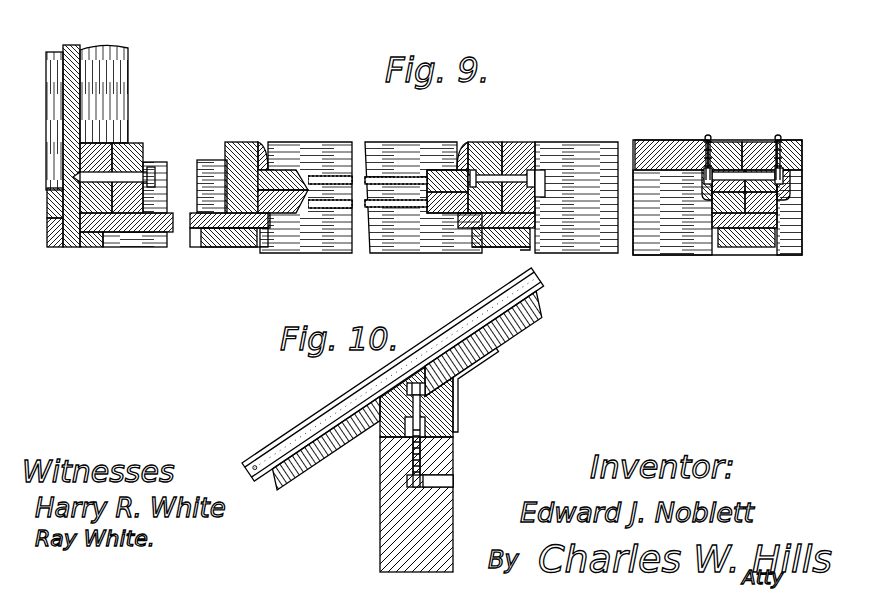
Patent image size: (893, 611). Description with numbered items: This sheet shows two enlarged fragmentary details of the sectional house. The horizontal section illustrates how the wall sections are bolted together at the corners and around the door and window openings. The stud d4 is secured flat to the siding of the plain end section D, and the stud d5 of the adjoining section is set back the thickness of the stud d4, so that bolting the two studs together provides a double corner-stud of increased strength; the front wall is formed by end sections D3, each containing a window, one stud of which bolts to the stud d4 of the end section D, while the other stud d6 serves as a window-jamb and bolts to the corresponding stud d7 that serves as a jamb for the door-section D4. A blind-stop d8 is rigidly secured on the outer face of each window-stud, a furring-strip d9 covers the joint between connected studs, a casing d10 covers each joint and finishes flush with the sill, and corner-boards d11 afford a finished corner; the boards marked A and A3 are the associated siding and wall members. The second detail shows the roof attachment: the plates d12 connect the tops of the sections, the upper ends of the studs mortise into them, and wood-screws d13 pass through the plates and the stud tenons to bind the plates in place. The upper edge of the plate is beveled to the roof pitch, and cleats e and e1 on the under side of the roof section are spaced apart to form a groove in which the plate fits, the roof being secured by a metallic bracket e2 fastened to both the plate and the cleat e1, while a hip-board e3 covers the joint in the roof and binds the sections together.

In FIG. 9, the element A is at (160, 164).
In FIG. 9, the upright board A3 is at (98, 53).
In FIG. 9, the plain section D is at (63, 118).
In FIG. 9, the end section of front wall D3 is at (157, 223).
In FIG. 9, the door-section D4 is at (793, 120).
In FIG. 9, the studding d4 is at (58, 242).
In FIG. 9, the stud d5 is at (130, 202).
In FIG. 9, the stud d6 is at (252, 152).
In FIG. 9, the stud d7 is at (520, 148).
In FIG. 9, the blind-stop d8 is at (265, 232).
In FIG. 9, the furring-strip d9 is at (207, 246).
In FIG. 9, the casing d10 is at (233, 246).
In FIG. 9, the corner-board d11 is at (62, 237).
In FIG. 10, the plate d12 is at (457, 402).
In FIG. 10, the wood-screw d13 is at (338, 458).
In FIG. 10, the cleat e is at (327, 456).
In FIG. 10, the cleat e1 is at (538, 326).
In FIG. 10, the metallic bracket e2 is at (483, 361).
In FIG. 10, the hip-board e3 is at (330, 404).